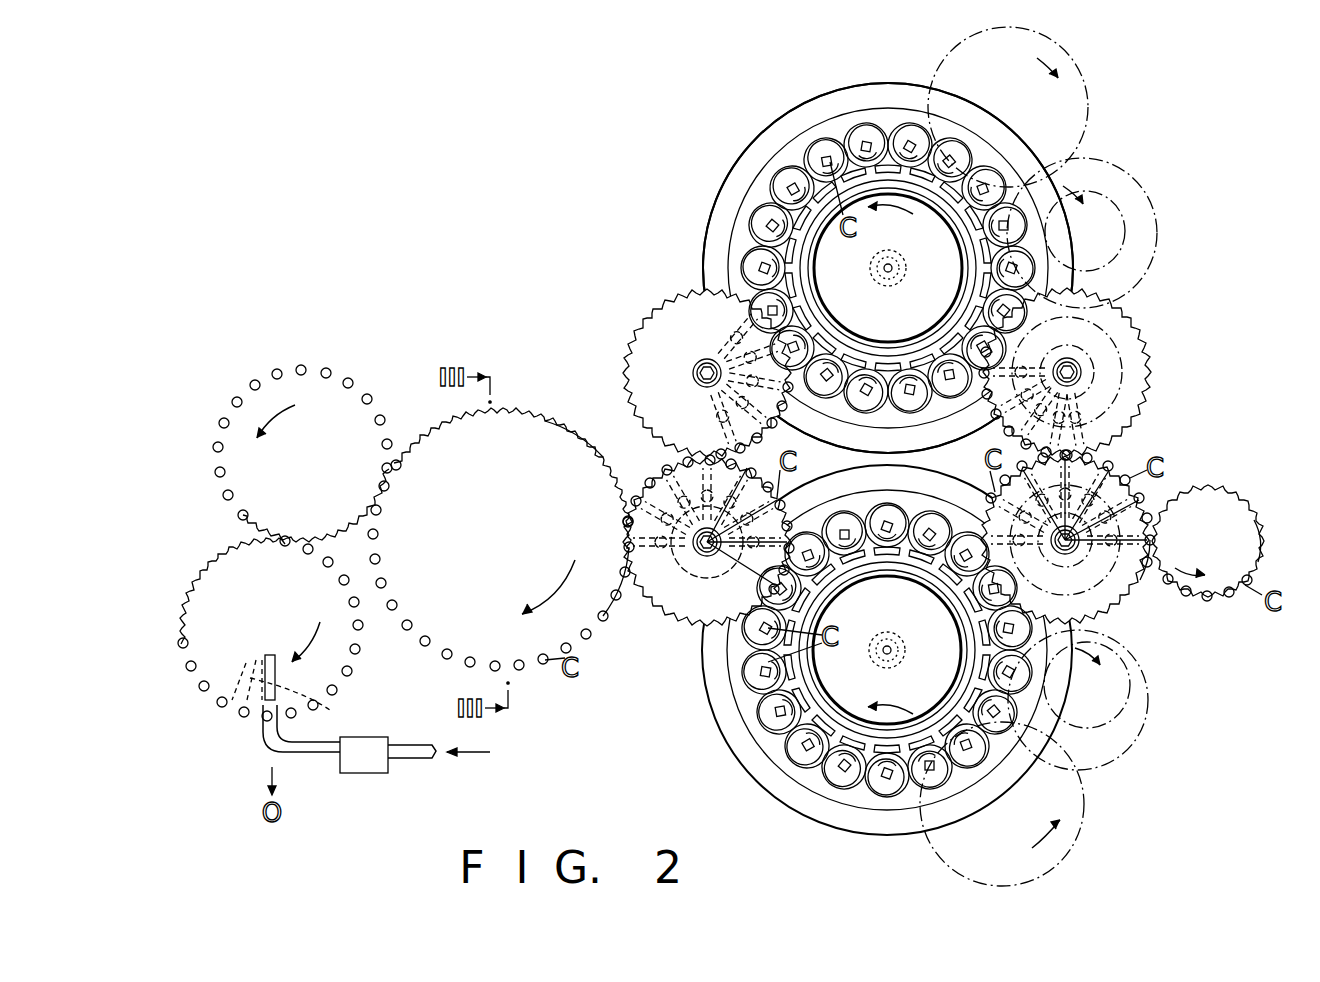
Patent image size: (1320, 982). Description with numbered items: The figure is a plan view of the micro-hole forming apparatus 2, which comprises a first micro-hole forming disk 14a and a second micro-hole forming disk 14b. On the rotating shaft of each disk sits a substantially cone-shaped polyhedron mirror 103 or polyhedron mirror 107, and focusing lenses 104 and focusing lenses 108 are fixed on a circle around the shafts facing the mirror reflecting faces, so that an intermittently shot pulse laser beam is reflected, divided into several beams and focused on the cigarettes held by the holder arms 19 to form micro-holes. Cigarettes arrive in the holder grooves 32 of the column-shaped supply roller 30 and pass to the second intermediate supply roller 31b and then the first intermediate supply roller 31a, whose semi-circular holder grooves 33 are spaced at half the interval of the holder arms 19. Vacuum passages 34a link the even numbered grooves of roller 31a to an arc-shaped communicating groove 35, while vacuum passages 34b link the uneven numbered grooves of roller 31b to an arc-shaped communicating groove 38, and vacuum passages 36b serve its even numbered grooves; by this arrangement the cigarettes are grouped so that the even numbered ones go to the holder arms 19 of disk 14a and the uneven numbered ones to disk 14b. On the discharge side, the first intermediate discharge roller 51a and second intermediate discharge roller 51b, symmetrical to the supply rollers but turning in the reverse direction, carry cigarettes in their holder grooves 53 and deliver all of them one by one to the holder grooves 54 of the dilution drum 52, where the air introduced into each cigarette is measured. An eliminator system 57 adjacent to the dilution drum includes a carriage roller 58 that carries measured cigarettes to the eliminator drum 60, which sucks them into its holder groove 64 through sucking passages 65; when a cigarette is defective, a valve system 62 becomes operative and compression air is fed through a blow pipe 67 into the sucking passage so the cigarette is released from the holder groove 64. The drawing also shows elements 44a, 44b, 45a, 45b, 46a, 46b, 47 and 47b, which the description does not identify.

The micro-hole forming apparatus 2 is at (715, 156).
The first micro-hole forming disk 14a is at (836, 100).
The second micro-hole forming disk 14b is at (805, 798).
The holder arms 19 is at (905, 135).
The supply roller 30 is at (1238, 502).
The first intermediate supply roller 31a is at (1147, 345).
The second intermediate supply roller 31b is at (1135, 605).
The holder grooves 32 is at (1258, 553).
The holder grooves 33 is at (1150, 388).
The vacuum passages 34a is at (1140, 422).
The vacuum passages 34b is at (1069, 525).
The arc-shaped communicating groove 35 is at (1067, 363).
The vacuum passages 36b is at (1165, 480).
The arc-shaped communicating groove 38 is at (1125, 583).
The pitch circle 44a is at (1155, 212).
The pitch circle 44b is at (1152, 680).
The pitch circle 45a is at (1125, 232).
The pitch circle 45b is at (1130, 705).
The pitch circle 46a is at (1090, 80).
The pitch circle 46b is at (1085, 795).
The cam path 47 is at (1130, 310).
The cam path 47b is at (1120, 458).
The first intermediate discharge roller 51a is at (672, 305).
The second intermediate discharge roller 51b is at (683, 602).
The dilution drum 52 is at (535, 410).
The holder grooves 53 is at (665, 615).
The holder grooves 54 is at (604, 456).
The eliminator system 57 is at (186, 461).
The carriage roller 58 is at (325, 394).
The eliminator drum 60 is at (190, 627).
The valve system 62 is at (368, 775).
The holder groove 64 is at (193, 573).
The sucking passages 65 is at (236, 668).
The blow pipe 67 is at (300, 702).
The polyhedron mirror 103 is at (908, 266).
The focusing lenses 104 is at (933, 158).
The polyhedron mirror 107 is at (905, 656).
The focusing lenses 108 is at (885, 550).